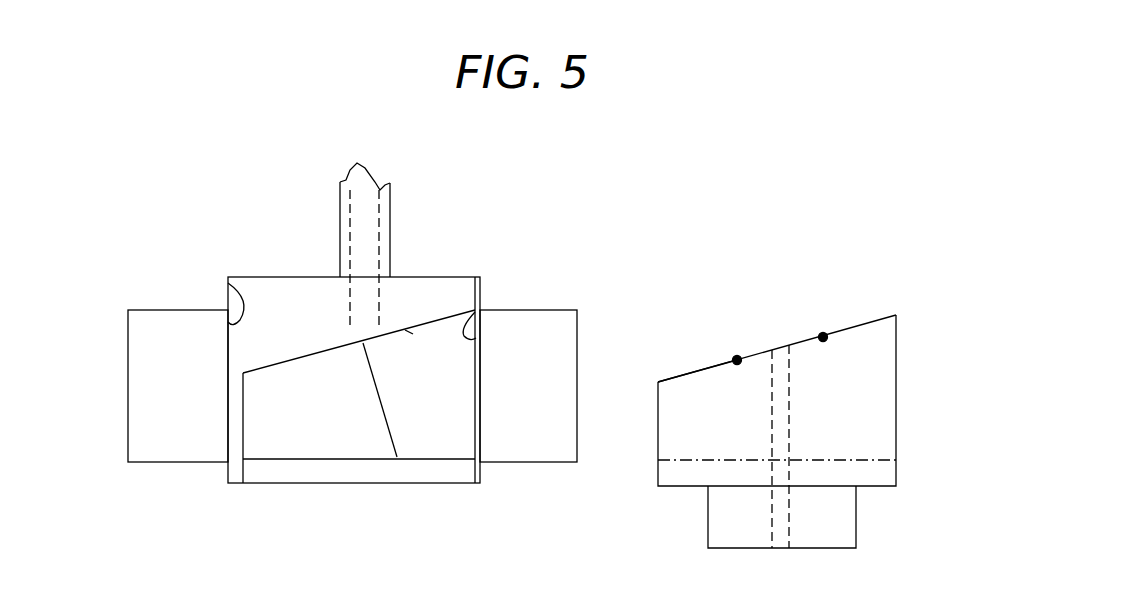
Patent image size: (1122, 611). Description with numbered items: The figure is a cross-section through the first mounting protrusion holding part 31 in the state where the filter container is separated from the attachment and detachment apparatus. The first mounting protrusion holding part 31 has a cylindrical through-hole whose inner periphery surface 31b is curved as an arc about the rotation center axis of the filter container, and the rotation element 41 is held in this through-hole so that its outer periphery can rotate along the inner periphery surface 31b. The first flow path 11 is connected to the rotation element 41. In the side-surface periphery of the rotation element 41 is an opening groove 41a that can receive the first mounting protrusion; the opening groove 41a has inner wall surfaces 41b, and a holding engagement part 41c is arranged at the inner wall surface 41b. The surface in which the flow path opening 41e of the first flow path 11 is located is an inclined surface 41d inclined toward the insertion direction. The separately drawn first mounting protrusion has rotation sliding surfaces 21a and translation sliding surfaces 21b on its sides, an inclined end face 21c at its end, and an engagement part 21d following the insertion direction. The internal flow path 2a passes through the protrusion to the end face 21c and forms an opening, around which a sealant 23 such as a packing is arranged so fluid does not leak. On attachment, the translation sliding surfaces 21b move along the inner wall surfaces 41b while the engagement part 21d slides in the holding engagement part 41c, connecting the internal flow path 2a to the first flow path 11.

The first flow path 11 is at (390, 250).
The first mounting protrusion holding part 31 is at (159, 309).
The inner periphery surface 31b is at (228, 283).
The rotation element 41 is at (322, 297).
The opening groove 41a is at (467, 387).
The inner wall surface 41b is at (405, 330).
The holding engagement part 41c is at (340, 465).
The inclined surface 41d is at (272, 368).
The flow path opening 41e is at (397, 457).
The rotation sliding surface 21a is at (897, 420).
The translation sliding surface 21b is at (877, 332).
The end face 21c is at (692, 372).
The engagement part 21d is at (658, 486).
The sealant 23 is at (826, 337).
The internal flow path 2a is at (778, 345).